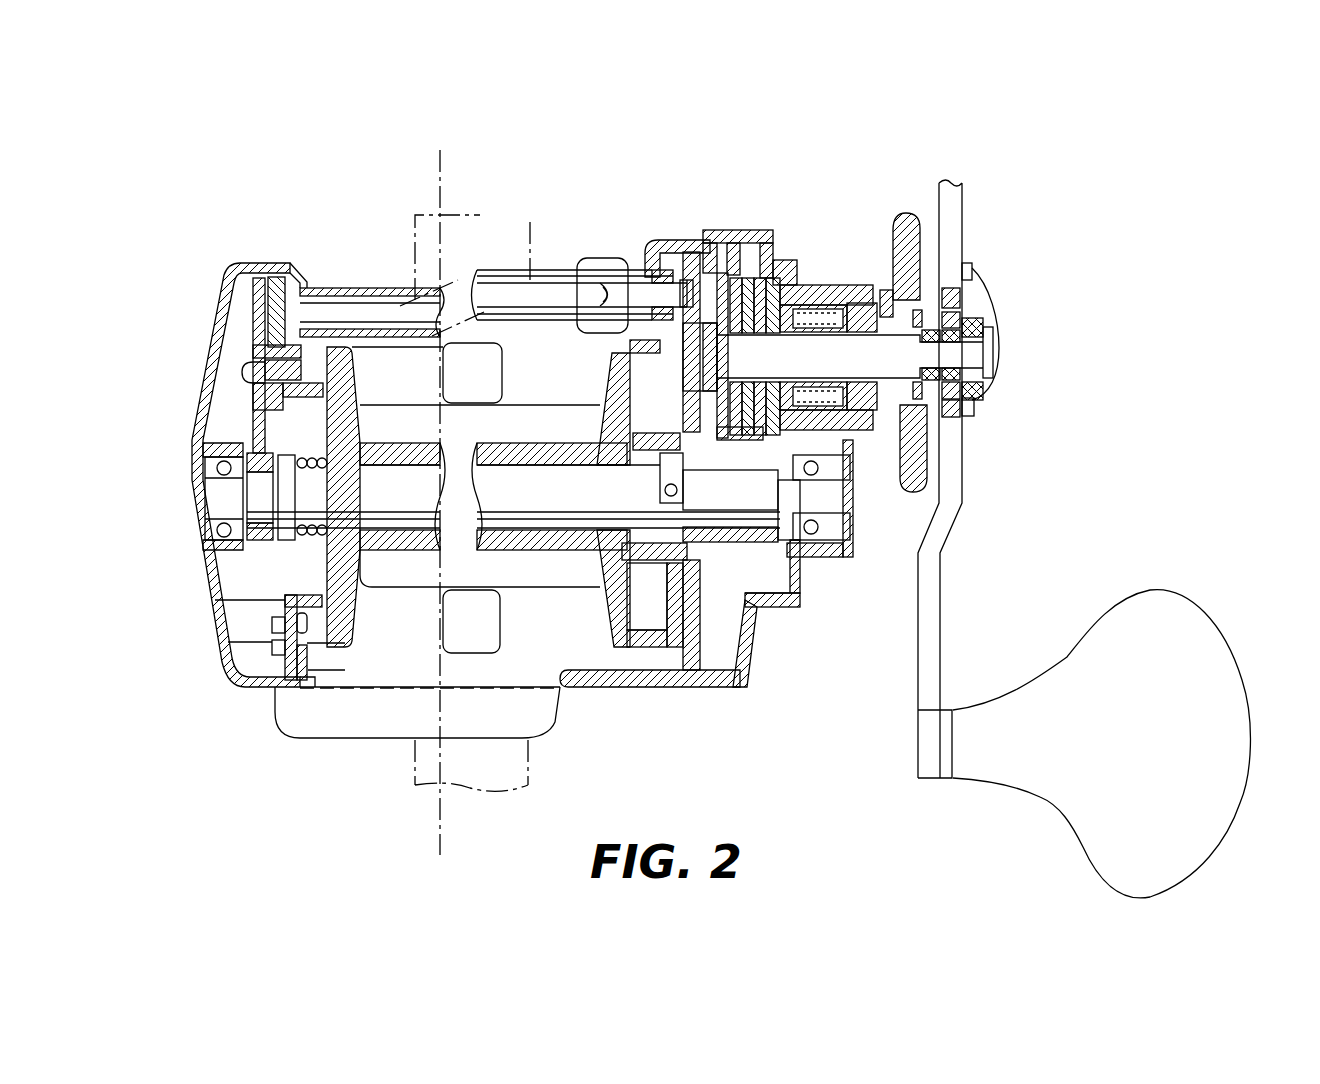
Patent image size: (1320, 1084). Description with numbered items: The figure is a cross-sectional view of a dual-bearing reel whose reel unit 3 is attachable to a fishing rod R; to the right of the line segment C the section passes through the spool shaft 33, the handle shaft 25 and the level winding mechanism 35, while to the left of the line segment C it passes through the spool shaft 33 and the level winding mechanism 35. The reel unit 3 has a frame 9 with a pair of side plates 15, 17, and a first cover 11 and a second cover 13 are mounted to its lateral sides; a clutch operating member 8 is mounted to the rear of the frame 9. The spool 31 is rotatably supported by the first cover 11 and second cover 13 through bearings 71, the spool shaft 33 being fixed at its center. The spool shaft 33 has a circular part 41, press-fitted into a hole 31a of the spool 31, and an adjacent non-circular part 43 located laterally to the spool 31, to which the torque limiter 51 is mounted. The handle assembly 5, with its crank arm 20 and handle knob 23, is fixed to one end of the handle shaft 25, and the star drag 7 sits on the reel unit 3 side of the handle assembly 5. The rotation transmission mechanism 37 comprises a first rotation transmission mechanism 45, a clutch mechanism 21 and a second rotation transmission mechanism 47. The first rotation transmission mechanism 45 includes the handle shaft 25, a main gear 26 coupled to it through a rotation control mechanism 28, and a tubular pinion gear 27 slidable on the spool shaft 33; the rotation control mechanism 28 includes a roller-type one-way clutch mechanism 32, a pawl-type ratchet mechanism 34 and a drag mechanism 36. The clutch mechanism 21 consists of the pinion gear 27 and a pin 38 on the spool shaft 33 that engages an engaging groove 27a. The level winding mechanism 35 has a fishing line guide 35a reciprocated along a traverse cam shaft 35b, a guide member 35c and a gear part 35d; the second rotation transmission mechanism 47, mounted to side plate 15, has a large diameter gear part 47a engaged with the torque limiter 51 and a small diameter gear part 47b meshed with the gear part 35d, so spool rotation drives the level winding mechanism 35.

The reel unit 3 is at (796, 297).
The handle assembly 5 is at (1113, 539).
The star drag 7 is at (900, 218).
The clutch operating member 8 is at (363, 732).
The frame 9 is at (490, 382).
The first cover 11 is at (237, 266).
The second cover 13 is at (747, 665).
The side plate 15 is at (299, 270).
The side plate 17 is at (693, 632).
The crank arm 20 is at (940, 590).
The clutch mechanism 21 is at (752, 570).
The handle knob 23 is at (1200, 853).
The handle shaft 25 is at (963, 353).
The main gear 26 is at (792, 432).
The pinion gear 27 is at (691, 527).
The engaging groove 27a is at (665, 495).
The rotation control mechanism 28 is at (776, 285).
The spool 31 is at (493, 496).
The hole 31a is at (545, 473).
The one-way clutch mechanism 32 is at (823, 290).
The spool shaft 33 is at (500, 500).
The ratchet mechanism 34 is at (717, 270).
The level winding mechanism 35 is at (496, 237).
The fishing line guide 35a is at (612, 258).
The traverse cam shaft 35b is at (325, 305).
The guide member 35c is at (395, 262).
The gear part 35d is at (280, 285).
The drag mechanism 36 is at (739, 275).
The rotation transmission mechanism 37 is at (183, 355).
The pin 38 is at (600, 608).
The circular part 41 is at (387, 487).
The non-circular part 43 is at (310, 493).
The first rotation transmission mechanism 45 is at (700, 277).
The second rotation transmission mechanism 47 is at (183, 355).
The large diameter gear part 47a is at (250, 312).
The small diameter gear part 47b is at (273, 400).
The torque limiter 51 is at (266, 550).
The bearings 71 is at (223, 540).
The line segment C is at (440, 850).
The fishing rod R is at (483, 215).